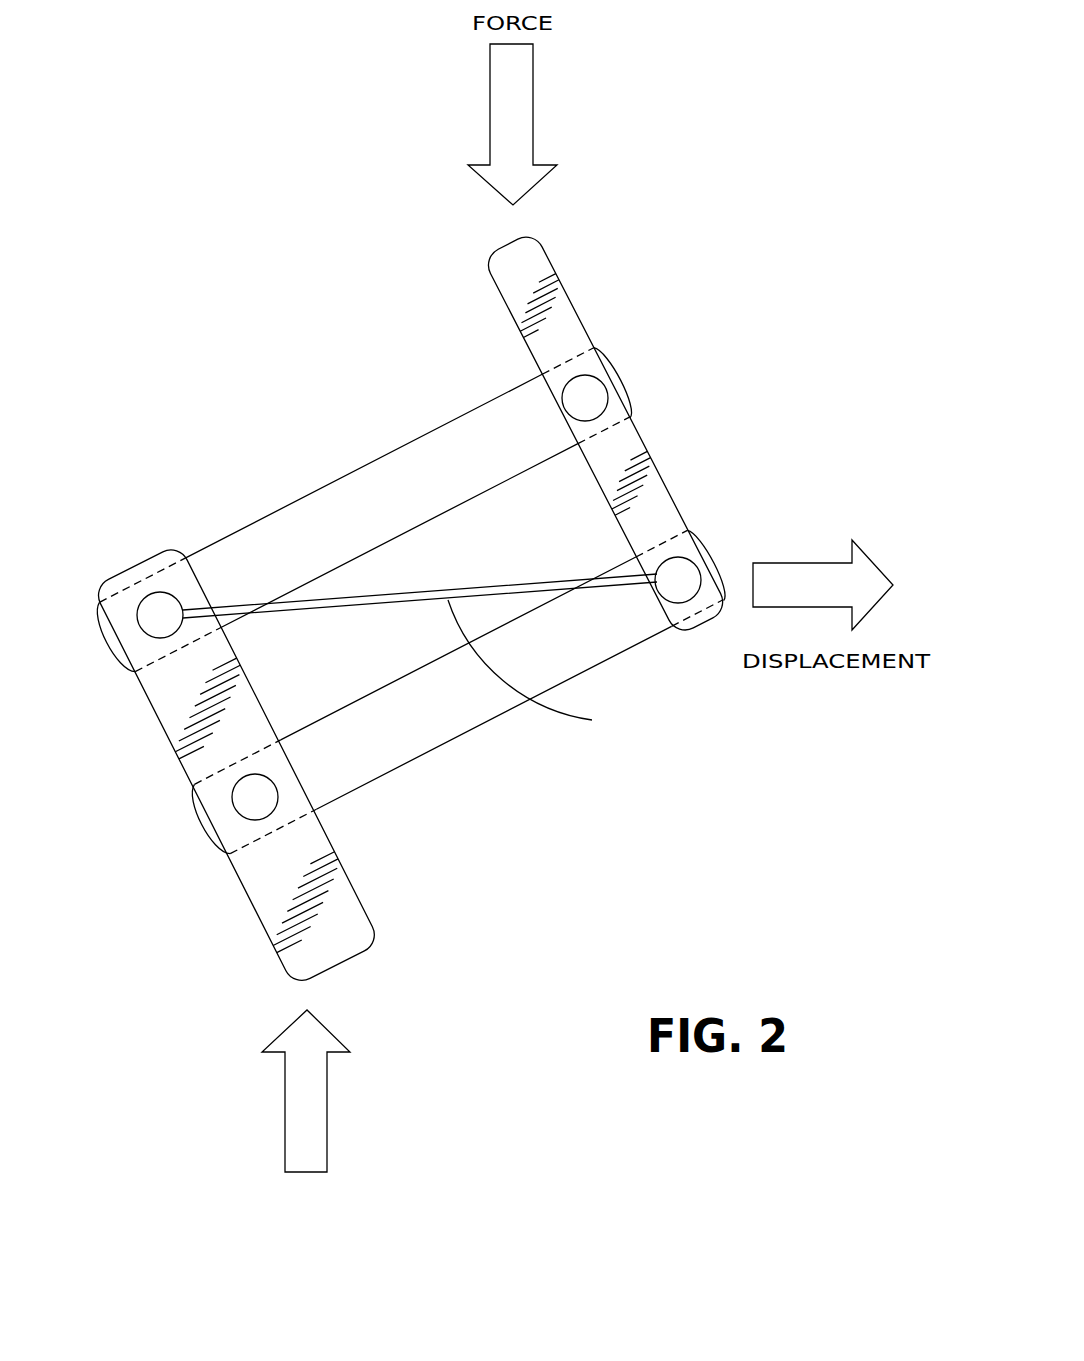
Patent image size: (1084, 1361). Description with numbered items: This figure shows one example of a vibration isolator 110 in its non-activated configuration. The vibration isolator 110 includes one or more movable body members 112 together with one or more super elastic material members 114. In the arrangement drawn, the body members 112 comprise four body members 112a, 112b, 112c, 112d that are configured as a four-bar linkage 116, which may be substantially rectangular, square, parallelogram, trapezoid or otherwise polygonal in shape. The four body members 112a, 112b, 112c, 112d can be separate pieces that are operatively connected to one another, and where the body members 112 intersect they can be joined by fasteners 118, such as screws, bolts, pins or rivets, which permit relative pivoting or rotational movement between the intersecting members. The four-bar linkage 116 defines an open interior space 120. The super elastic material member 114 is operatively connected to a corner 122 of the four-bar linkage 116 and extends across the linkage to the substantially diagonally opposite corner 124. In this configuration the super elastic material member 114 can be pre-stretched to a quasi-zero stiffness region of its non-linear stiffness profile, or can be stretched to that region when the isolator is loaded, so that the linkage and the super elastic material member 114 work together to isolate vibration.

The vibration isolator 110 is at (306, 322).
The body members 112 is at (262, 518).
The body member 112a is at (550, 284).
The body member 112b is at (451, 453).
The body member 112c is at (176, 707).
The body member 112d is at (368, 757).
The super elastic material member 114 is at (539, 667).
The four-bar linkage 116 is at (540, 786).
The fasteners 118 is at (607, 393).
The open interior space 120 is at (572, 513).
The corner 122 is at (117, 543).
The diagonally opposite corner 124 is at (722, 645).